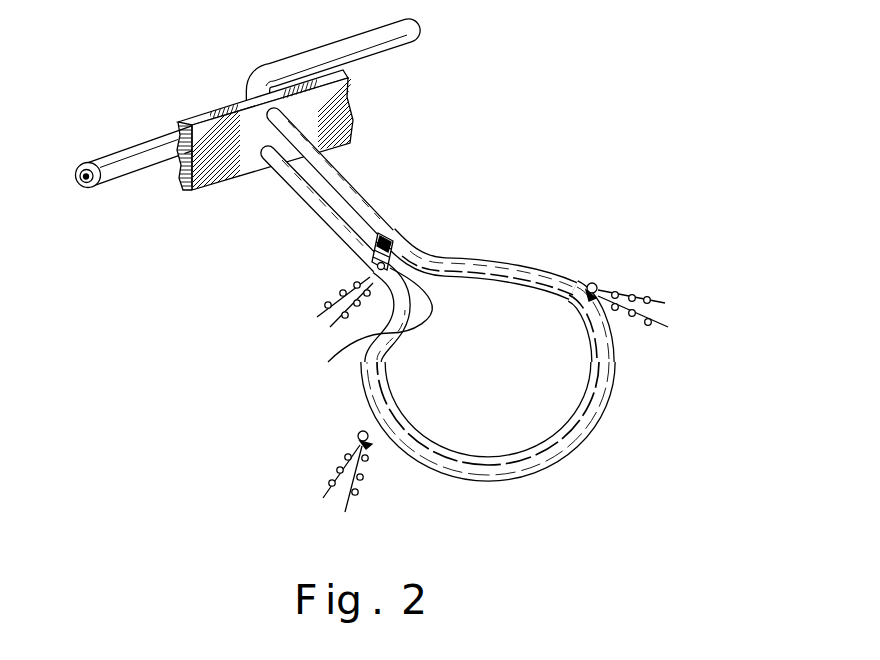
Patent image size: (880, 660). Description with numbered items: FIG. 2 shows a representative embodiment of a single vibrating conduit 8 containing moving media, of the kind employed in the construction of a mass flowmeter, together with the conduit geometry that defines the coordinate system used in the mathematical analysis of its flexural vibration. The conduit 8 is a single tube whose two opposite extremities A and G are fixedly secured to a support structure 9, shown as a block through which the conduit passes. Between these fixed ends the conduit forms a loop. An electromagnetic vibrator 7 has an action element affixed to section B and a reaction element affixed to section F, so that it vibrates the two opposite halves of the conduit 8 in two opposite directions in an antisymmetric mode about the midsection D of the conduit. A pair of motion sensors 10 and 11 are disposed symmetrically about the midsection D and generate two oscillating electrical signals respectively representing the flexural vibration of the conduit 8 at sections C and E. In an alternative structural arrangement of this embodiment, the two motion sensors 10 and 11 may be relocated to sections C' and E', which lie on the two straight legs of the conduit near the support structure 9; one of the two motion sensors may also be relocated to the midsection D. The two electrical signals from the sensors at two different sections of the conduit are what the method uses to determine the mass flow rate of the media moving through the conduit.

The support structure 9 is at (240, 124).
The extremity of the conduit G is at (297, 117).
The section E' is at (382, 170).
The section F is at (405, 233).
The motion sensor 11 is at (593, 284).
The section E is at (648, 288).
The section C' is at (280, 219).
The section B is at (367, 275).
The electromagnetic vibrator 7 is at (369, 308).
The motion sensor 10 is at (358, 433).
The section C is at (307, 477).
The conduit 8 is at (534, 464).
The midsection D is at (560, 443).
The extremity of the conduit A is at (190, 191).